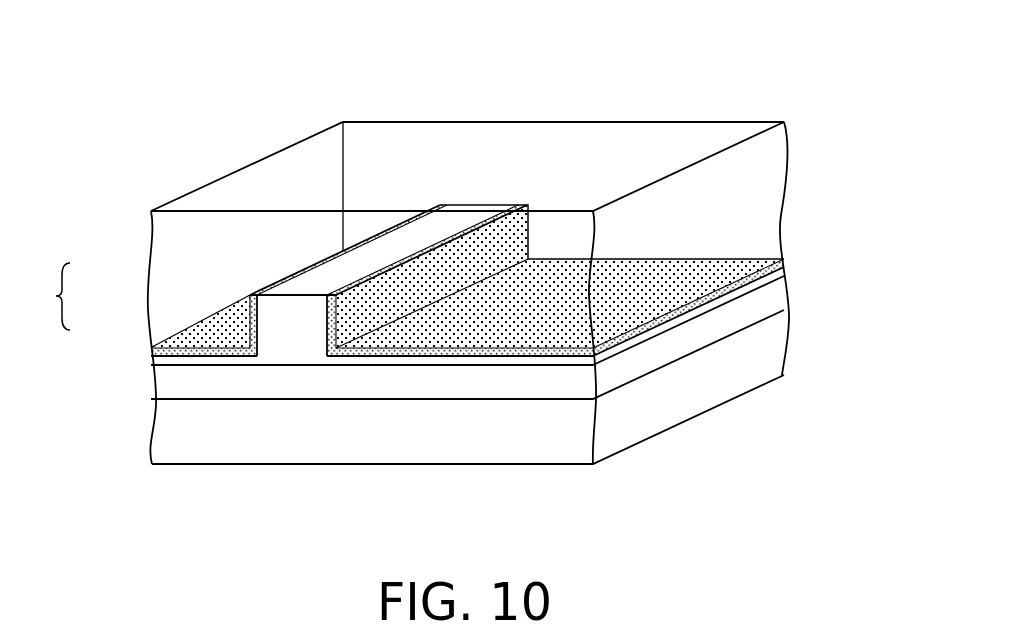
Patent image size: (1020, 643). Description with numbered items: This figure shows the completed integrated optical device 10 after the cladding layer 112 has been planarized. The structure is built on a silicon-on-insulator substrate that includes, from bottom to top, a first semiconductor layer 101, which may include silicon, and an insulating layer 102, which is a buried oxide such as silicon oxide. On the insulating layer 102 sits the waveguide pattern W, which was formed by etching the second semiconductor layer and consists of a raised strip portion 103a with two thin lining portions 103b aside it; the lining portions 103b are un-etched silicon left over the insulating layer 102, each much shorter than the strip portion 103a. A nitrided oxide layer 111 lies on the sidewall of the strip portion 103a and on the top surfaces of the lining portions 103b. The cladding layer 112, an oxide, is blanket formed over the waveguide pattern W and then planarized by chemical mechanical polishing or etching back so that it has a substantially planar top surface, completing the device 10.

The integrated optical device 10 is at (447, 249).
The first semiconductor layer 101 is at (765, 357).
The insulating layer 102 is at (767, 307).
The nitrided oxide layer 111 is at (783, 263).
The cladding layer 112 is at (762, 178).
The strip portion 103a is at (272, 328).
The lining portions 103b is at (198, 360).
The waveguide pattern W is at (52, 296).